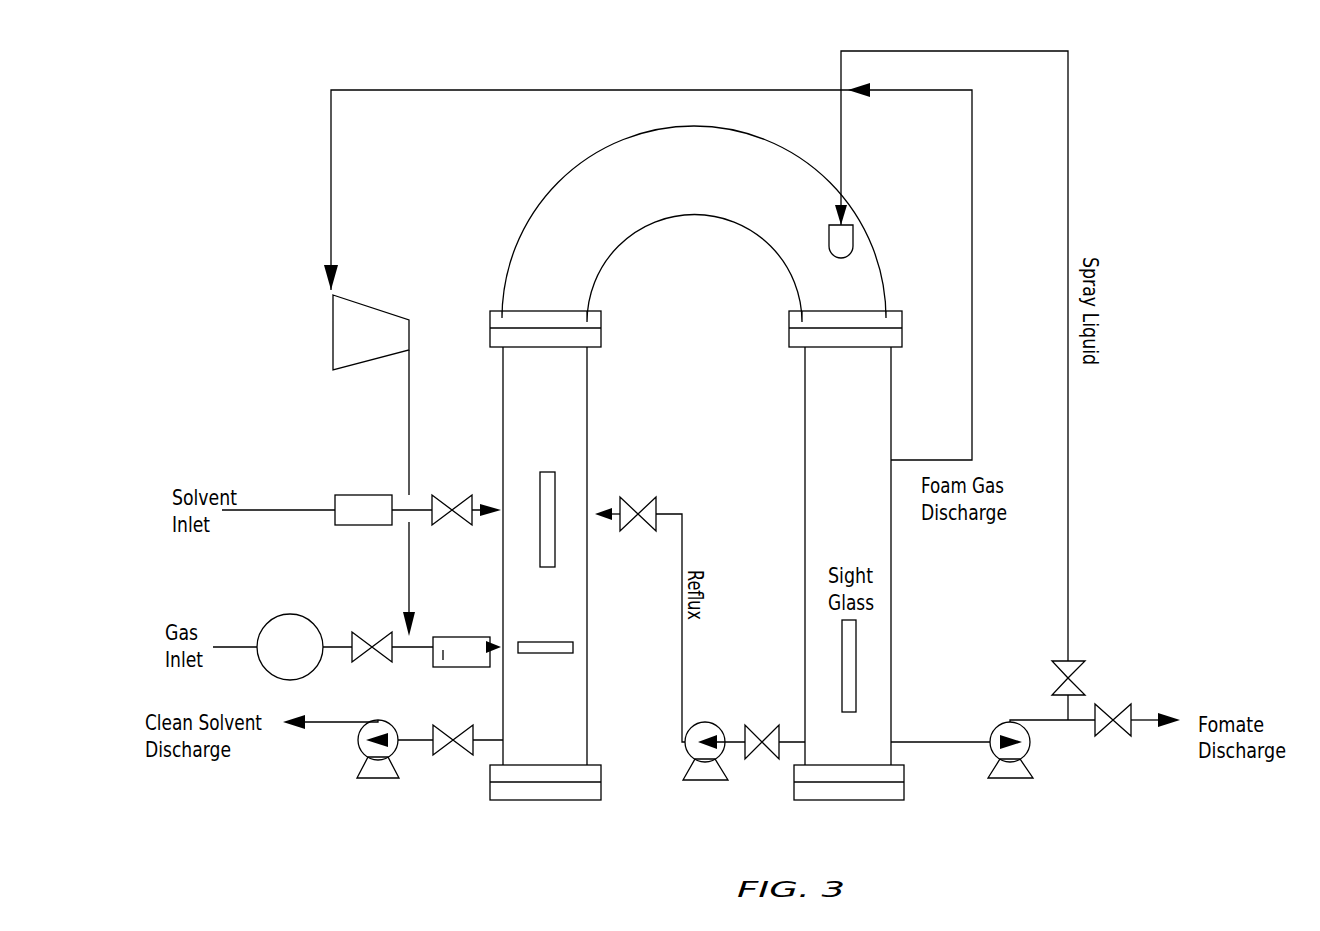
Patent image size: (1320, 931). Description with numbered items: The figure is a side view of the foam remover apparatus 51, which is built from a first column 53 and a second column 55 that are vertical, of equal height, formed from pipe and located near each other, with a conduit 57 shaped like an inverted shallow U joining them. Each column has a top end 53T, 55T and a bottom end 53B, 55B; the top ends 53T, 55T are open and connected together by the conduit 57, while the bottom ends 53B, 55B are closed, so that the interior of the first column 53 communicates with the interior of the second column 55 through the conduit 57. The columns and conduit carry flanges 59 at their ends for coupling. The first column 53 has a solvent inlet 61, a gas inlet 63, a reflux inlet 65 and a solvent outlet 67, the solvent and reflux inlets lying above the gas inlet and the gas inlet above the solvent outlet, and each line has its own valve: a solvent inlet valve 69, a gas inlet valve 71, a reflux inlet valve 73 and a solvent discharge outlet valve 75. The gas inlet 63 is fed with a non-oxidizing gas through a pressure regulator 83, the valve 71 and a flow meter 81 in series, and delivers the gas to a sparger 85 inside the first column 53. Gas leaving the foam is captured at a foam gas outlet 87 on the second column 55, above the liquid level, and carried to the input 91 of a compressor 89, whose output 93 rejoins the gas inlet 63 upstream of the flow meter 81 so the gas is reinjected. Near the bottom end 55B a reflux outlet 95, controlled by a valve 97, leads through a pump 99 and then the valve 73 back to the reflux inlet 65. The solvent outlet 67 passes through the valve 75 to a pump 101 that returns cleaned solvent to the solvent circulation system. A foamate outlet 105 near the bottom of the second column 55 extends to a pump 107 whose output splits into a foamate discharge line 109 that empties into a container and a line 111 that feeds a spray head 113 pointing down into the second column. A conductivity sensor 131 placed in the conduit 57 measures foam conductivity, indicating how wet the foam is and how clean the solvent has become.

The foam remover apparatus 51 is at (286, 170).
The first column 53 is at (587, 440).
The top end of first column 53T is at (587, 385).
The bottom end of first column 53B is at (590, 748).
The second column 55 is at (802, 424).
The top end of second column 55T is at (797, 378).
The bottom end of second column 55B is at (893, 690).
The conduit 57 is at (669, 125).
The flanges 59 is at (902, 316).
The solvent inlet 61 is at (472, 503).
The gas inlet 63 is at (495, 632).
The reflux inlet 65 is at (600, 518).
The solvent outlet 67 is at (493, 737).
The solvent inlet valve 69 is at (440, 495).
The gas inlet valve 71 is at (380, 628).
The reflux inlet valve 73 is at (375, 493).
The solvent discharge outlet valve 75 is at (460, 760).
The flow meter 81 is at (443, 650).
The pressure regulator 83 is at (300, 612).
The sparger 85 is at (557, 657).
The foam gas outlet 87 is at (903, 460).
The compressor 89 is at (357, 297).
The compressor input 91 is at (330, 229).
The compressor output 93 is at (412, 395).
The reflux outlet 95 is at (797, 737).
The reflux outlet valve 97 is at (757, 749).
The reflux pump 99 is at (705, 722).
The solvent discharge pump 101 is at (380, 772).
The foamate outlet 105 is at (912, 742).
The foamate pump 107 is at (1002, 722).
The foamate discharge line 109 is at (1143, 712).
The spray line 111 is at (1068, 608).
The spray head 113 is at (853, 237).
The conductivity sensor 131 is at (689, 183).